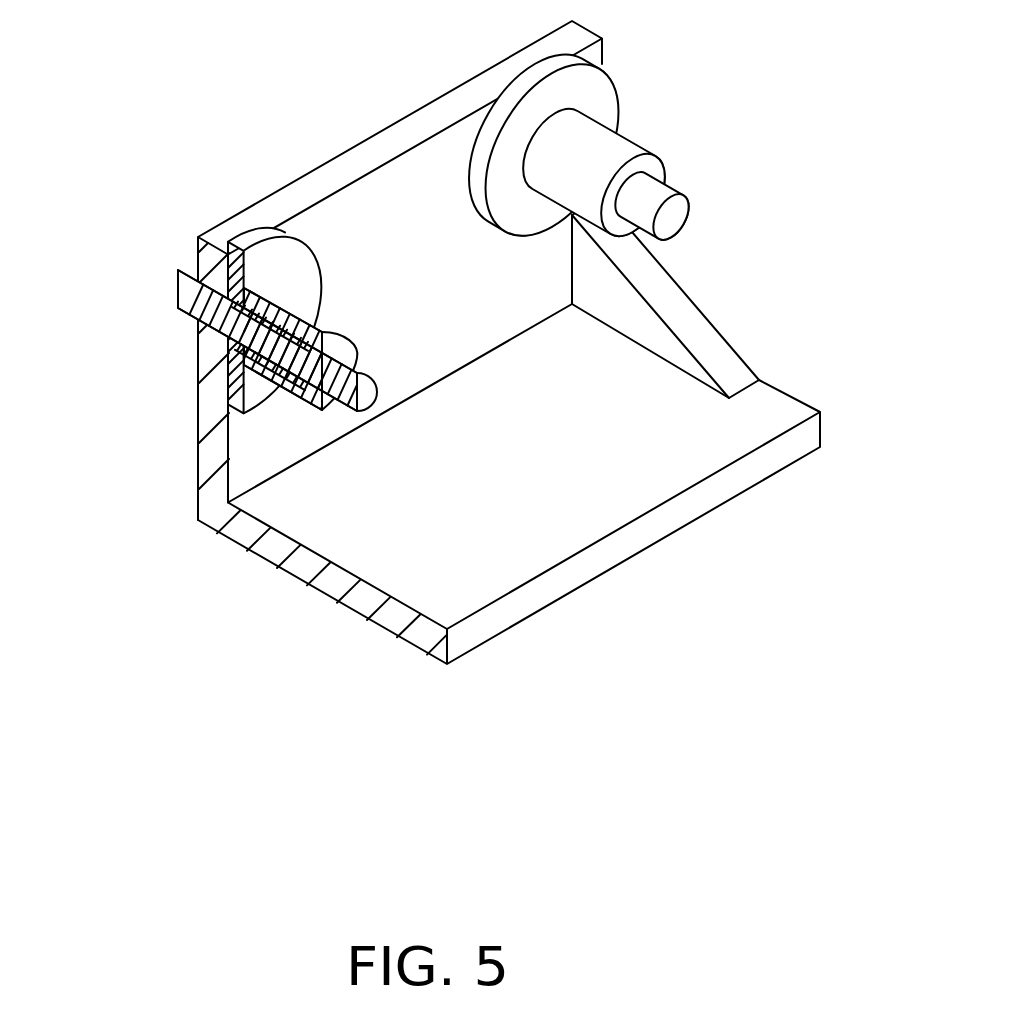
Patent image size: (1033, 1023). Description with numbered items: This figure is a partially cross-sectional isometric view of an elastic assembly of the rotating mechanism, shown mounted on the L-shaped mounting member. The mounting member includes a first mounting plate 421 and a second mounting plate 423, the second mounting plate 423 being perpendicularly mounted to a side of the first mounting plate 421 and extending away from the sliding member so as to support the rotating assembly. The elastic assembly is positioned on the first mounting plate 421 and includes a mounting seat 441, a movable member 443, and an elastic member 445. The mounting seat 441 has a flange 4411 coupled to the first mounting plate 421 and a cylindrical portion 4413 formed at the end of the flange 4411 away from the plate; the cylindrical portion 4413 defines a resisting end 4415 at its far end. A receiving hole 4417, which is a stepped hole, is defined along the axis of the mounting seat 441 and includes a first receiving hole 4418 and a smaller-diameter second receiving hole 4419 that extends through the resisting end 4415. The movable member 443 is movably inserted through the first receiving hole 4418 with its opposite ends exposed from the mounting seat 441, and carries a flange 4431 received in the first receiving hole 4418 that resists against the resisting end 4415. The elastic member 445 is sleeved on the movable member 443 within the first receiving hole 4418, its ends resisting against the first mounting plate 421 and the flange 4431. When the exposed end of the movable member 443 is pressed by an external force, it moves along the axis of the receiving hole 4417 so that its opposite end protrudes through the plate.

The first mounting plate 421 is at (473, 95).
The second mounting plate 423 is at (578, 578).
The mounting seat 441 is at (362, 34).
The flange 4411 is at (213, 324).
The cylindrical portion 4413 is at (331, 232).
The resisting end 4415 is at (342, 340).
The receiving hole 4417 is at (101, 418).
The first receiving hole 4418 is at (268, 400).
The second receiving hole 4419 is at (298, 400).
The movable member 443 is at (193, 293).
The elastic member 445 is at (230, 348).
The flange 4431 is at (230, 377).